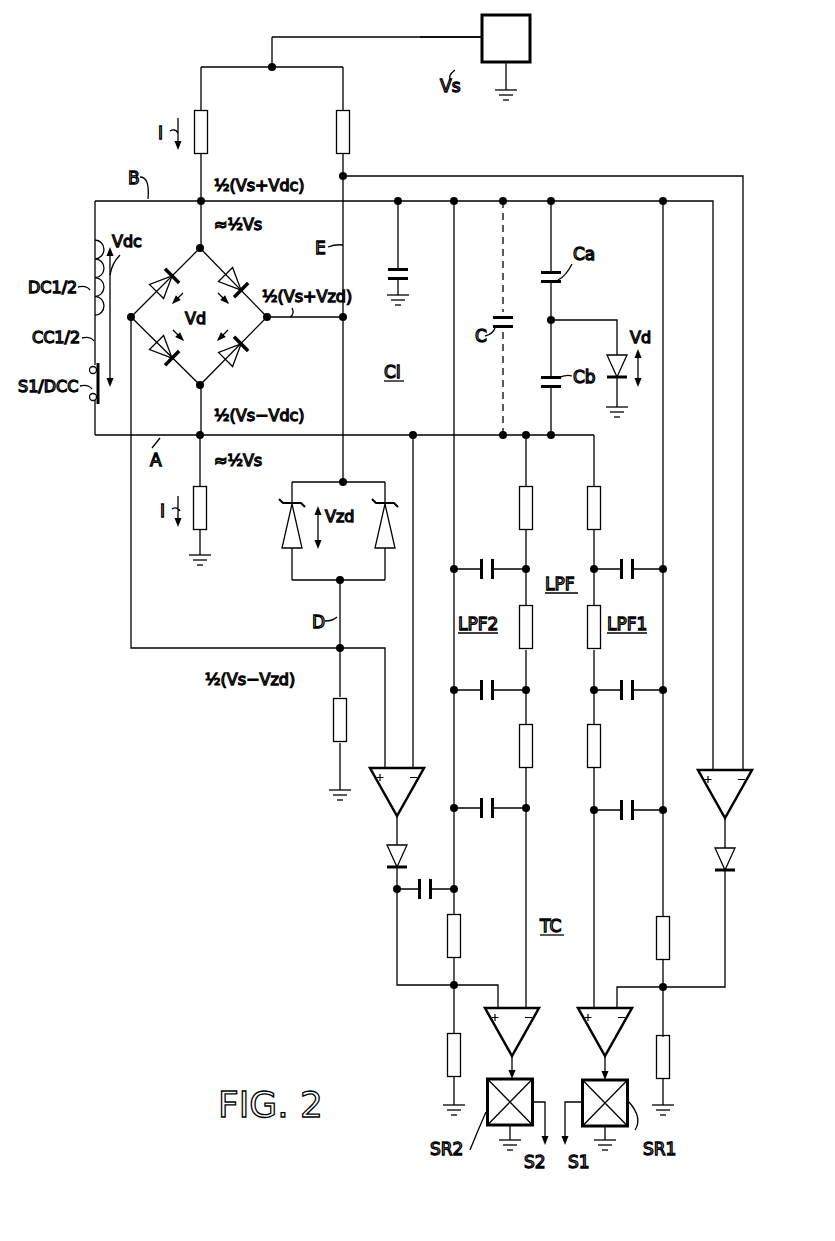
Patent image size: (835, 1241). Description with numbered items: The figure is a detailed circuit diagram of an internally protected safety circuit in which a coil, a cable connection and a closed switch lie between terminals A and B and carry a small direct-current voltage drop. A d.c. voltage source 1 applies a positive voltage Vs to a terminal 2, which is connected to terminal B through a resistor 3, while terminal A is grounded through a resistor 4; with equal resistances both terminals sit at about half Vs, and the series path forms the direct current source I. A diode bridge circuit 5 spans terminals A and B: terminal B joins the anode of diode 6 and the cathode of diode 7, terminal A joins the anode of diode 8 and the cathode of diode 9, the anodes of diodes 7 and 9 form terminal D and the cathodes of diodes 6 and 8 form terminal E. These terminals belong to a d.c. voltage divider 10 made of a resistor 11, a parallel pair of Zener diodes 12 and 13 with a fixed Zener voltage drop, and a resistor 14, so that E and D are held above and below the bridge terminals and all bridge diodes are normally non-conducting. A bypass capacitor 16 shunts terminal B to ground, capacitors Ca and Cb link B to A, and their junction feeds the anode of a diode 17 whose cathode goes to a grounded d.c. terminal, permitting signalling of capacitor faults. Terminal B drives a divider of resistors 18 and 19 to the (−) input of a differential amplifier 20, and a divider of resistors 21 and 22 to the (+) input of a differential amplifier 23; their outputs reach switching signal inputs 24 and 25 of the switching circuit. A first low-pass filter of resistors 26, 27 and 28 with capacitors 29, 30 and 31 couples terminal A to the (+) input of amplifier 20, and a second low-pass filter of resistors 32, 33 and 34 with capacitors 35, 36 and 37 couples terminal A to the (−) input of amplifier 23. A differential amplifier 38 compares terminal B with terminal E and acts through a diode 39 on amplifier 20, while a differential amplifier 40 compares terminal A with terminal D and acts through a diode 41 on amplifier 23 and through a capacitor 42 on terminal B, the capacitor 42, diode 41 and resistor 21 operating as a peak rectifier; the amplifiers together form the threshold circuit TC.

The d.c. voltage source 1 is at (531, 42).
The terminal 2 is at (478, 35).
The resistor 3 is at (208, 128).
The resistor 4 is at (207, 504).
The diode bridge circuit 5 is at (203, 279).
The diode 6 is at (240, 278).
The diode 7 is at (160, 278).
The diode 8 is at (240, 358).
The diode 9 is at (160, 358).
The d.c. voltage divider 10 is at (370, 421).
The resistor 11 is at (350, 130).
The Zener diode 12 is at (282, 520).
The Zener diode 13 is at (392, 522).
The resistor 14 is at (333, 722).
The bypass capacitor 16 is at (405, 275).
The diode 17 is at (608, 370).
The resistor 18 is at (670, 932).
The resistor 19 is at (670, 1057).
The differential amplifier 20 is at (605, 1003).
The resistor 21 is at (447, 940).
The resistor 22 is at (447, 1055).
The differential amplifier 23 is at (500, 1005).
The switching signal input 24 is at (610, 1062).
The switching signal input 25 is at (507, 1062).
The resistor 26 is at (601, 740).
The resistor 27 is at (587, 632).
The resistor 28 is at (601, 508).
The capacitor 29 is at (627, 820).
The capacitor 30 is at (627, 700).
The capacitor 31 is at (627, 558).
The resistor 32 is at (519, 740).
The resistor 33 is at (533, 627).
The resistor 34 is at (519, 508).
The capacitor 35 is at (487, 818).
The capacitor 36 is at (487, 700).
The capacitor 37 is at (487, 558).
The differential amplifier 38 is at (712, 812).
The diode 39 is at (714, 860).
The differential amplifier 40 is at (385, 812).
The diode 41 is at (386, 857).
The capacitor 42 is at (430, 900).